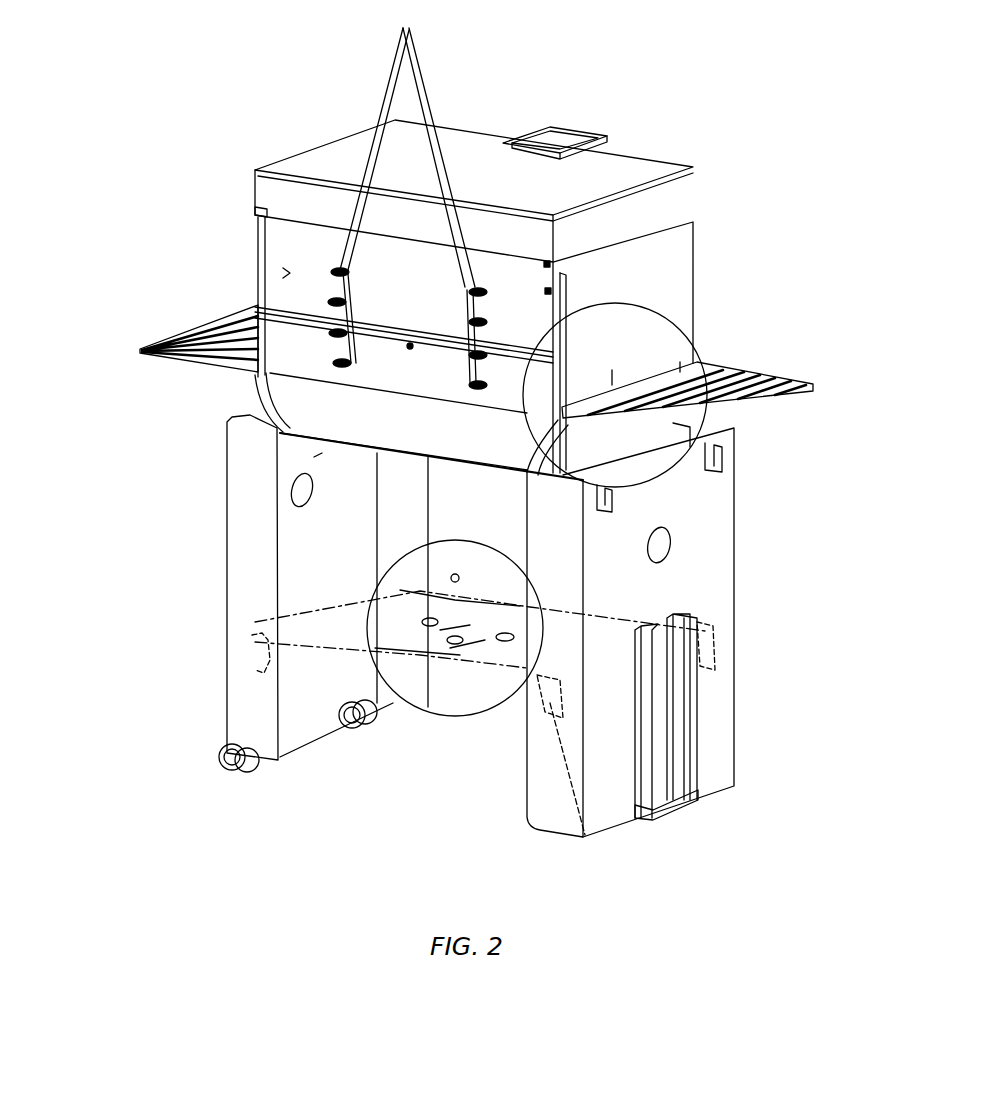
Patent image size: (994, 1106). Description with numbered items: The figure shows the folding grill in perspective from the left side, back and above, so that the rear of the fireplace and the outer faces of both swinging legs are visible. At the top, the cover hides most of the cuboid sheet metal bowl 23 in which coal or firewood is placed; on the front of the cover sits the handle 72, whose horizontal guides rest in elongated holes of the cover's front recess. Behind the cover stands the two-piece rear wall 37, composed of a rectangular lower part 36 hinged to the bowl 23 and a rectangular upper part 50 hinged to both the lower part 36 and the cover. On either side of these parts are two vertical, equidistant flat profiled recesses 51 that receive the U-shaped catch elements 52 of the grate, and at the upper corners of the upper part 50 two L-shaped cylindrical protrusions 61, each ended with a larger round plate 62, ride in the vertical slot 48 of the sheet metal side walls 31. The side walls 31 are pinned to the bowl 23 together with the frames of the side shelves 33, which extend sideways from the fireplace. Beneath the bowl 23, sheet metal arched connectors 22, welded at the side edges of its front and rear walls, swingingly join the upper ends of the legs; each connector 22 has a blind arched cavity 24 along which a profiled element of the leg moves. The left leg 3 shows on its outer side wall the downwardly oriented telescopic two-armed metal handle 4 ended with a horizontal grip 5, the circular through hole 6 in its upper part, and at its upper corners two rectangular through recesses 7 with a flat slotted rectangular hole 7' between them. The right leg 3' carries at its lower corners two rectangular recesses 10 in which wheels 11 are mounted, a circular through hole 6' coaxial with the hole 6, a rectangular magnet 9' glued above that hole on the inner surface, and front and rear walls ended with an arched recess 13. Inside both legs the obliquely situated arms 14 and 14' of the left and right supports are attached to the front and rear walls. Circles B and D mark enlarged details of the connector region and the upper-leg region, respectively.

The flat profiled recesses 51 is at (458, 26).
The U-shaped catch elements 52 is at (325, 297).
The handle 72 is at (580, 127).
The cylindrical protrusions 61 is at (798, 117).
The round plate 62 is at (560, 273).
The vertical slot 48 is at (563, 303).
The upper part of the rear wall 50 is at (283, 273).
The side walls 31 is at (673, 287).
The side shelves 33 is at (800, 385).
The lower part of the rear wall 36 is at (282, 341).
The rear wall 37 is at (282, 327).
The arched connectors 22 is at (257, 395).
The blind arched cavity 24 is at (252, 417).
The right leg 3' is at (248, 587).
The rectangular magnet 9' is at (195, 484).
The circular through hole 6' is at (192, 523).
The arms 14' is at (166, 678).
The arched recess 13 is at (393, 703).
The wheels 11 is at (217, 758).
The rectangular recesses 10 is at (352, 735).
The bowl 23 is at (418, 433).
The detail circle B is at (473, 717).
The detail circle D is at (701, 428).
The left leg 3 is at (690, 632).
The flat slotted rectangular hole 7' is at (725, 497).
The rectangular through recesses 7 is at (730, 460).
The circular through hole 6 is at (747, 560).
The telescopic two-armed metal handle 4 is at (693, 790).
The grip 5 is at (683, 813).
The arms 14 is at (601, 788).